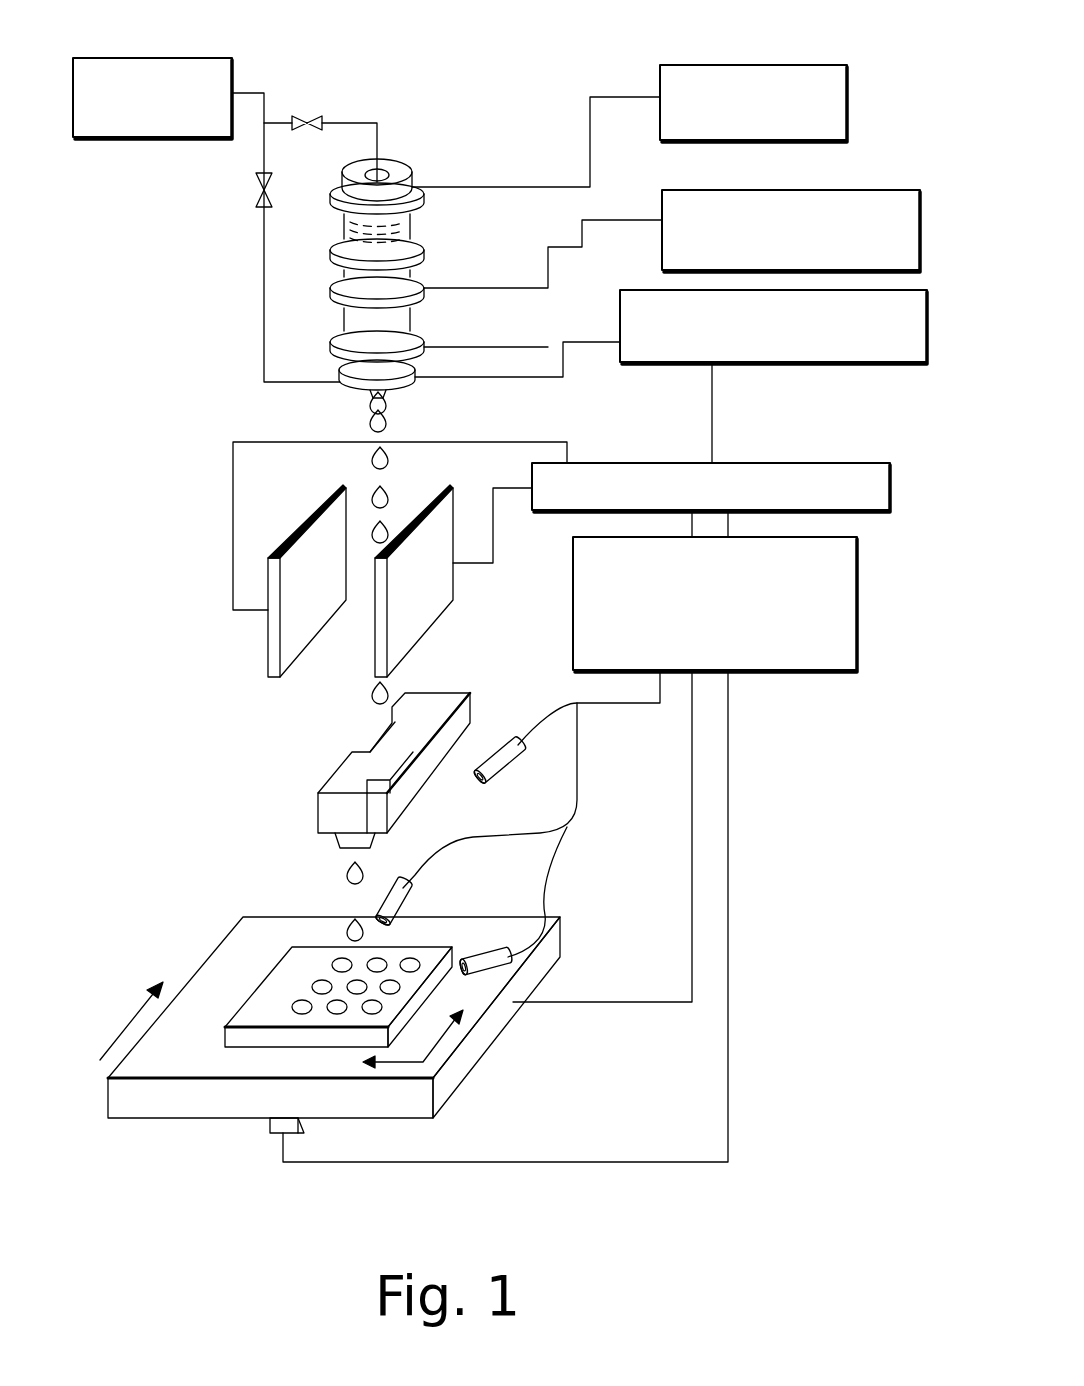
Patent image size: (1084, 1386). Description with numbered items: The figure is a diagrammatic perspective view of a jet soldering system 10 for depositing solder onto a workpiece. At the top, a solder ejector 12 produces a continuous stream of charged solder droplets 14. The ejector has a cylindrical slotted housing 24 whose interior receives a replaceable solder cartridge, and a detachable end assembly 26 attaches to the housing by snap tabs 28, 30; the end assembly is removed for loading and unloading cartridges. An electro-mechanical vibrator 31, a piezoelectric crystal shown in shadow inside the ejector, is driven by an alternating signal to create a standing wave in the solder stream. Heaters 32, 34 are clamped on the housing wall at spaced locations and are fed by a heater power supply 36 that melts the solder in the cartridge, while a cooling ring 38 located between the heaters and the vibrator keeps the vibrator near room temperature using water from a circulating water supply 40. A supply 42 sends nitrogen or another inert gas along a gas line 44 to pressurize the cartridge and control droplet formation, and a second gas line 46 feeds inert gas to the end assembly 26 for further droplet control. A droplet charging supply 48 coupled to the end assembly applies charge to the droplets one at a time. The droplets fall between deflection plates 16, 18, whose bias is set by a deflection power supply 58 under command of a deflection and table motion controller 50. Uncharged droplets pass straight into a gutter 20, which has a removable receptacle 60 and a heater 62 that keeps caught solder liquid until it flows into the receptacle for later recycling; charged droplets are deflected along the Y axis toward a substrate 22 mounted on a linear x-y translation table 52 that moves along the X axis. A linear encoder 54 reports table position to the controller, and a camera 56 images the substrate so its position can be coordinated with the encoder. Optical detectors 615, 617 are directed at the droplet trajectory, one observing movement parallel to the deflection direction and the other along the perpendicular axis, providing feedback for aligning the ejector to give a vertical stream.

The jet soldering system 10 is at (168, 339).
The solder ejector 12 is at (382, 271).
The solder droplets 14 is at (372, 455).
The deflection plate 16 is at (268, 650).
The deflection plate 18 is at (425, 632).
The gutter 20 is at (395, 767).
The substrate 22 is at (235, 1010).
The cylindrical slotted housing 24 is at (340, 283).
The detachable end assembly 26 is at (372, 395).
The snap tab 28 is at (340, 375).
The snap tab 30 is at (413, 372).
The electro-mechanical vibrator 31 is at (345, 225).
The heater 32 is at (422, 333).
The heater 34 is at (335, 288).
The heater power supply 36 is at (888, 190).
The cooling ring 38 is at (417, 240).
The circulating water supply 40 is at (820, 65).
The supply 42 is at (110, 58).
The gas line 44 is at (355, 123).
The gas line 46 is at (264, 252).
The droplet charging supply 48 is at (925, 290).
The deflection and table motion controller 50 is at (773, 671).
The linear x-y translation table 52 is at (243, 935).
The linear encoder 54 is at (270, 1125).
The camera 56 is at (510, 770).
The deflection power supply 58 is at (850, 463).
The removable receptacle 60 is at (400, 800).
The heater 62 is at (340, 850).
The optical detector 615 is at (405, 900).
The optical detector 617 is at (478, 953).